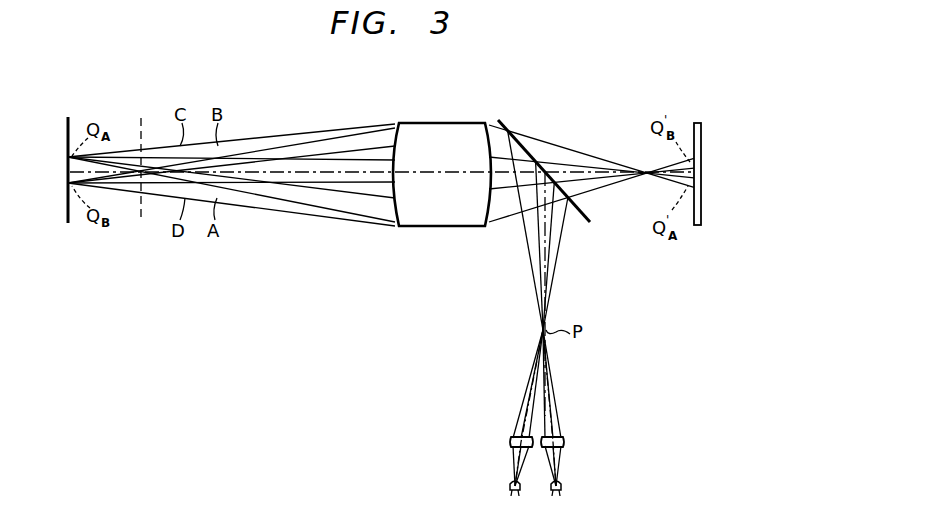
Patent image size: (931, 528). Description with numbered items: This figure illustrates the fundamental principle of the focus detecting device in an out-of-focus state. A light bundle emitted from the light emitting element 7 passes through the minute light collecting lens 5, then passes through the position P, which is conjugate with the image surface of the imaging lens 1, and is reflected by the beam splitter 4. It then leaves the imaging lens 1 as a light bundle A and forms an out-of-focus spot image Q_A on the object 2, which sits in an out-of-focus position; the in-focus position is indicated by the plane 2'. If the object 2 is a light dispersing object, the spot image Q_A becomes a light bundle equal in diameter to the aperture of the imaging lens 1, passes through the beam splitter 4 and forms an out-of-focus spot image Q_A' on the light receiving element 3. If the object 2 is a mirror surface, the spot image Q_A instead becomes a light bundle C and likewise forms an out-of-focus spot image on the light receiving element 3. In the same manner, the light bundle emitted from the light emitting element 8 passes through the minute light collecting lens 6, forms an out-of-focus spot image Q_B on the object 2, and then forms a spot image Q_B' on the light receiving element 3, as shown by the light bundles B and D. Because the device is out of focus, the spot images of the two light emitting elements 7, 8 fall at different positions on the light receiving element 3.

The imaging lens 1 is at (441, 128).
The object 2 is at (77, 151).
The in-focus position 2' is at (149, 150).
The light receiving element 3 is at (702, 122).
The beam splitter 4 is at (582, 224).
The minute light collecting lens 5 is at (510, 442).
The minute light collecting lens 6 is at (565, 442).
The light emitting element 7 is at (508, 490).
The light emitting element 8 is at (564, 492).